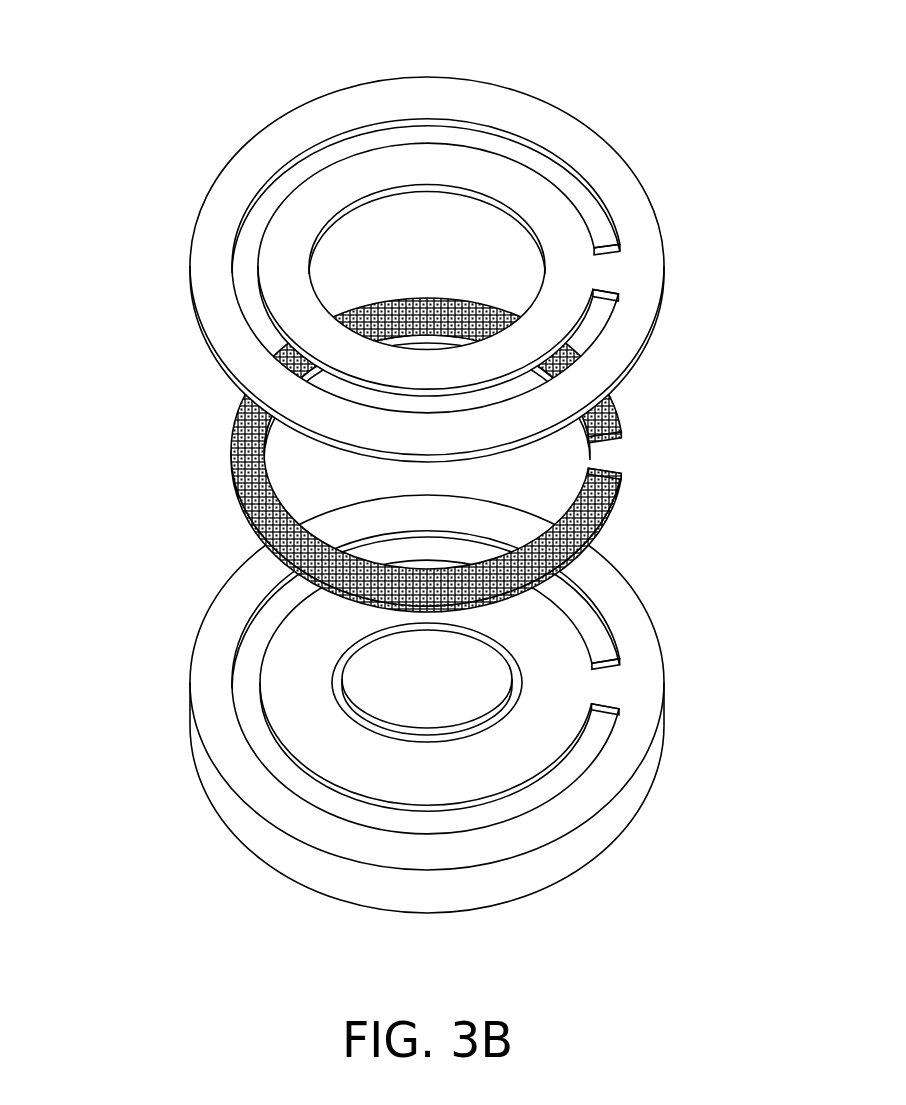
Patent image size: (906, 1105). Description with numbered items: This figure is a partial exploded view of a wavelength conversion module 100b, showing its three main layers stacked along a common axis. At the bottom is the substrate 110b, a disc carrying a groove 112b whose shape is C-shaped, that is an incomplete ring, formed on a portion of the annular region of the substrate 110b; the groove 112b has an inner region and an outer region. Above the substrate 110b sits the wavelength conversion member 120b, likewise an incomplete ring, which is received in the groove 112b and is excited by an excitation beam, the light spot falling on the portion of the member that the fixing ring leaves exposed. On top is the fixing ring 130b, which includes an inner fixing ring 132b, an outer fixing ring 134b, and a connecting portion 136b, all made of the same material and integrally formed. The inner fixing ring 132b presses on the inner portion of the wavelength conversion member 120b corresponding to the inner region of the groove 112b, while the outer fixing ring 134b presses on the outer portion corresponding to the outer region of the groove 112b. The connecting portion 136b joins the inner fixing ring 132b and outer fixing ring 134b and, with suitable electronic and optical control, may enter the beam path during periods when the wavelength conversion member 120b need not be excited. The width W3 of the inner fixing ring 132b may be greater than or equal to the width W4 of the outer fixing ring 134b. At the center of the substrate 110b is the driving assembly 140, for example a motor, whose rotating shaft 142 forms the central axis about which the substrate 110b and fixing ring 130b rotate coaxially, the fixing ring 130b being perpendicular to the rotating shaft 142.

The wavelength conversion module 100b is at (410, 466).
The substrate 110b is at (394, 704).
The groove 112b is at (256, 627).
The wavelength conversion member 120b is at (603, 485).
The fixing ring 130b is at (495, 235).
The inner fixing ring 132b is at (543, 313).
The outer fixing ring 134b is at (628, 193).
The connecting portion 136b is at (610, 273).
The driving assembly 140 is at (271, 752).
The rotating shaft 142 is at (393, 700).
The width of the inner fixing ring W3 is at (422, 223).
The width of the outer fixing ring W4 is at (570, 87).